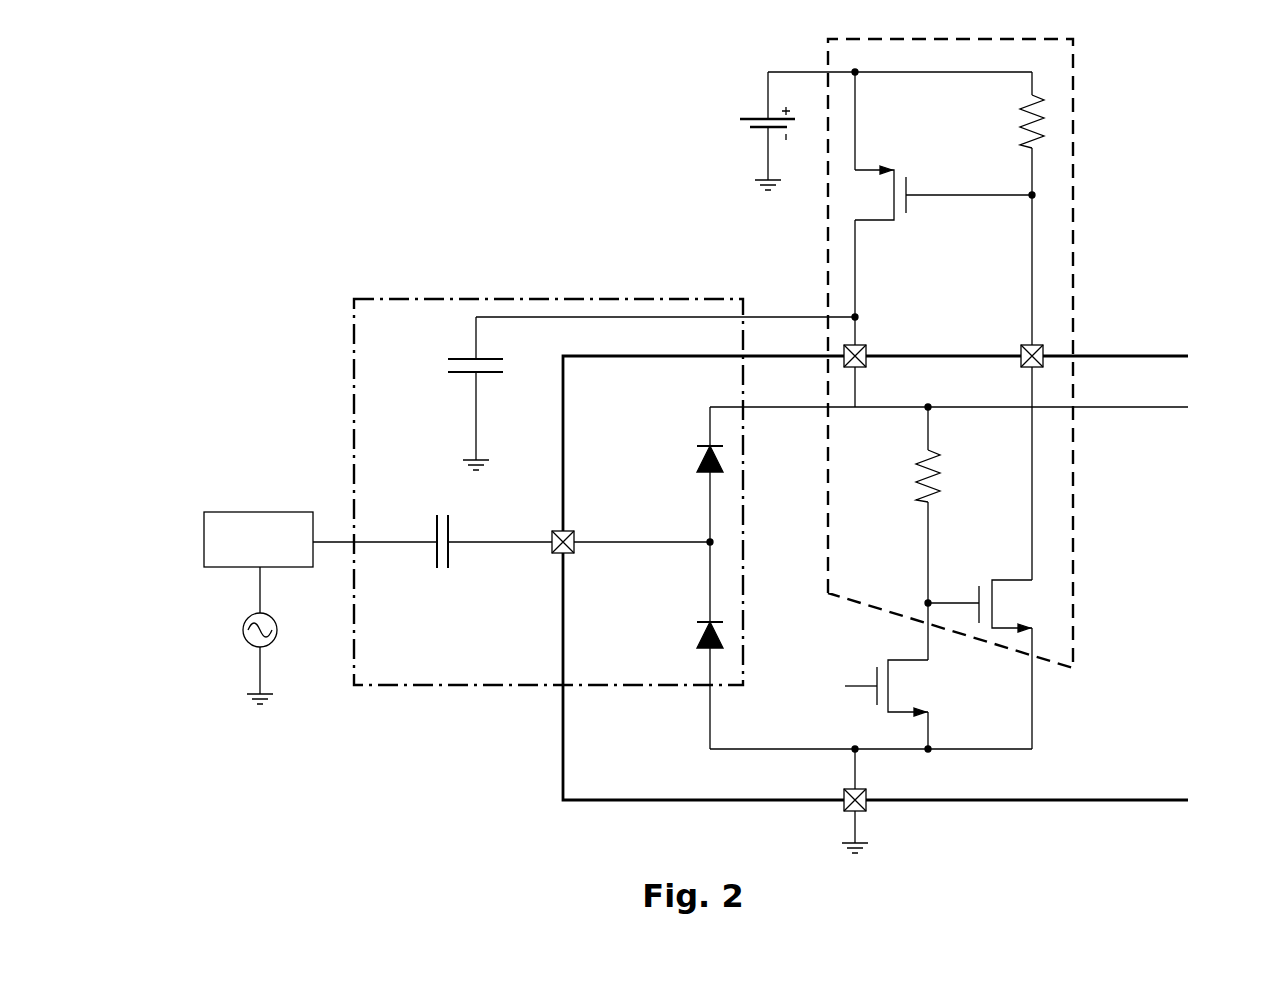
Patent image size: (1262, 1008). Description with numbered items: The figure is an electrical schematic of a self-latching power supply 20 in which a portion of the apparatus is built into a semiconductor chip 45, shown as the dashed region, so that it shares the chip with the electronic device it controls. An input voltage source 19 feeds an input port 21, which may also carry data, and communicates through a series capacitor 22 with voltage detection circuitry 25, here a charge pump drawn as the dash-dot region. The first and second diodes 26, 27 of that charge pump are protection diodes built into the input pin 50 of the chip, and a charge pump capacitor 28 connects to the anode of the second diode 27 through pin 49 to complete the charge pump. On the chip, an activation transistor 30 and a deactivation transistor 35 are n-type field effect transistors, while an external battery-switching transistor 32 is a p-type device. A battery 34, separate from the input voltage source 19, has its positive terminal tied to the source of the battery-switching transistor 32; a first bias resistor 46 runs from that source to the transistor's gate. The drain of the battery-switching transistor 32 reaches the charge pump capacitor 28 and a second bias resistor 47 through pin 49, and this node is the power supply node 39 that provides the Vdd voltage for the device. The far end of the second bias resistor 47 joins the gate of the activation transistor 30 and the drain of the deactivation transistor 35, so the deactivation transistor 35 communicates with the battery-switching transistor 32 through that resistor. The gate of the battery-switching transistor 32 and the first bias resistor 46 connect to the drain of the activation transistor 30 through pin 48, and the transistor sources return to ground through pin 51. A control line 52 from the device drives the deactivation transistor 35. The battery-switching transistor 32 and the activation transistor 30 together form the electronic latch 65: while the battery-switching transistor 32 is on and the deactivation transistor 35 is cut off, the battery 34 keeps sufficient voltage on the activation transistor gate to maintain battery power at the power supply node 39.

The input voltage source 19 is at (230, 628).
The self-latching power supply 20 is at (335, 98).
The input port 21 is at (206, 539).
The series capacitor 22 is at (443, 580).
The voltage detection circuitry 25 is at (368, 325).
The first diode 26 is at (696, 665).
The second diode 27 is at (697, 432).
The charge pump capacitor 28 is at (437, 368).
The activation transistor 30 is at (1008, 568).
The battery-switching transistor 32 is at (932, 206).
The battery 34 is at (730, 124).
The deactivation transistor 35 is at (877, 650).
The power supply node 39 is at (1137, 415).
The semiconductor chip 45 is at (1103, 350).
The first bias resistor 46 is at (1050, 130).
The second bias resistor 47 is at (920, 452).
The pin 48 is at (1041, 337).
The pin 49 is at (867, 332).
The input pin 50 is at (553, 566).
The pin 51 is at (877, 812).
The control line 52 is at (810, 720).
The electronic latch 65 is at (1040, 60).